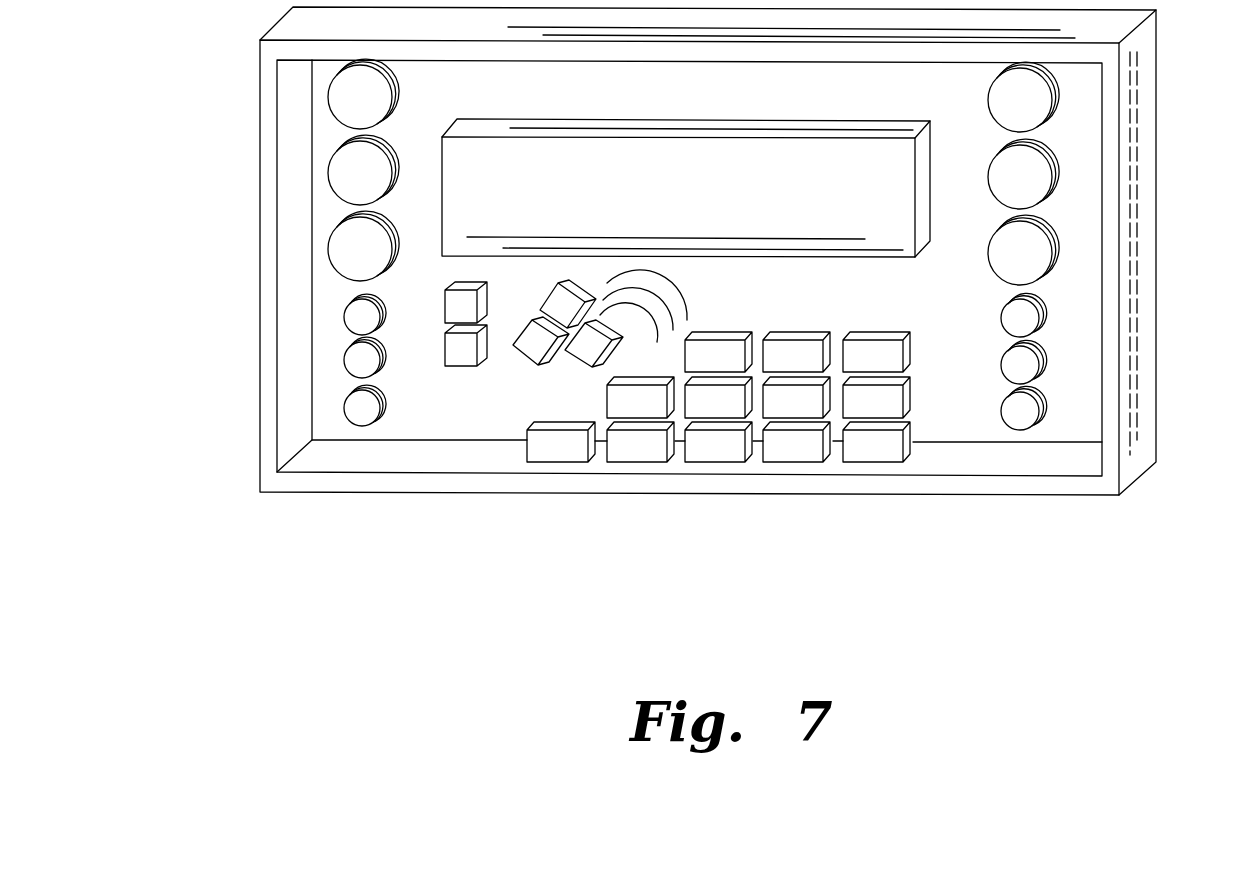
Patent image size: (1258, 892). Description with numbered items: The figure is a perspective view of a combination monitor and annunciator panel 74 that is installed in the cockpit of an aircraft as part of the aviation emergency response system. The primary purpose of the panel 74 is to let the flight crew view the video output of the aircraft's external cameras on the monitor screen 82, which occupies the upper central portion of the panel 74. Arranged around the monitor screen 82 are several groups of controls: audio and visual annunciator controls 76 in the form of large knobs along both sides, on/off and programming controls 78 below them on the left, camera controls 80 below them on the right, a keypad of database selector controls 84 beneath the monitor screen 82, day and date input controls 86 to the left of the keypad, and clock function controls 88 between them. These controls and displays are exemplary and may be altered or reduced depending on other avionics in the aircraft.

The combination monitor and annunciator panel 74 is at (280, 493).
The audio and visual annunciator controls 76 is at (328, 103).
The on/off and programming controls 78 is at (344, 317).
The camera controls 80 is at (1039, 412).
The monitor screen 82 is at (680, 184).
The database selector controls 84 is at (873, 460).
The day and date input controls 86 is at (460, 367).
The clock function controls 88 is at (520, 362).